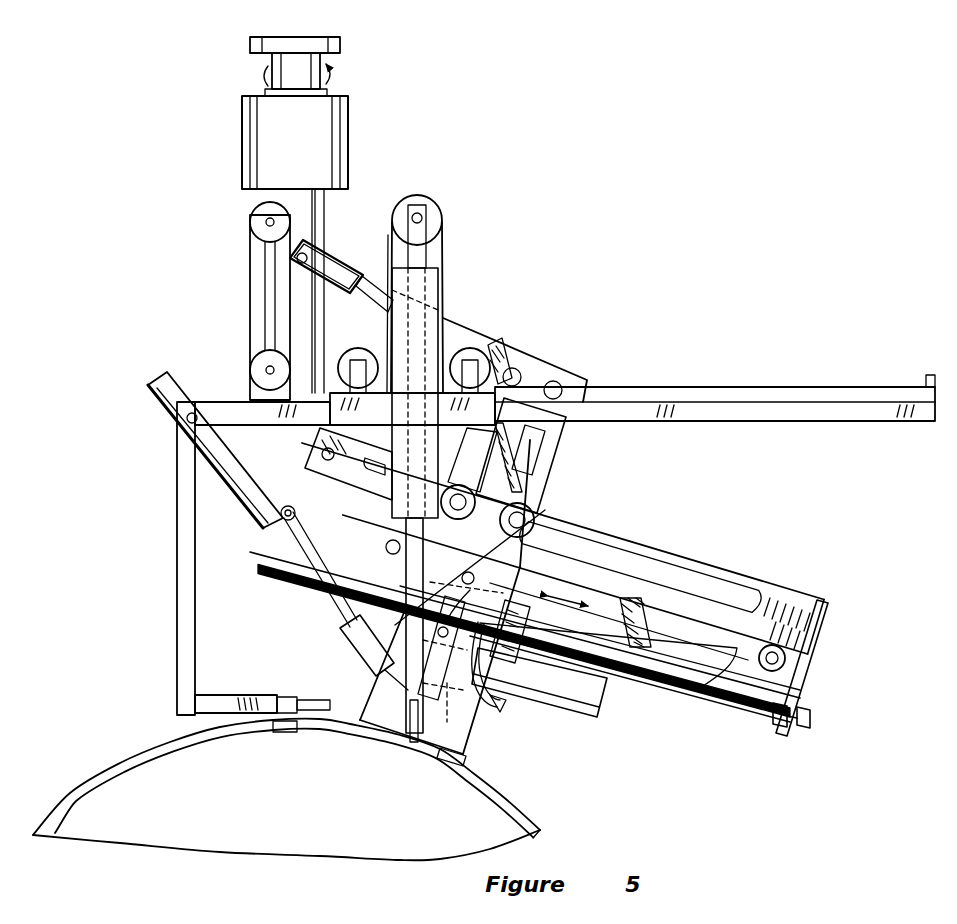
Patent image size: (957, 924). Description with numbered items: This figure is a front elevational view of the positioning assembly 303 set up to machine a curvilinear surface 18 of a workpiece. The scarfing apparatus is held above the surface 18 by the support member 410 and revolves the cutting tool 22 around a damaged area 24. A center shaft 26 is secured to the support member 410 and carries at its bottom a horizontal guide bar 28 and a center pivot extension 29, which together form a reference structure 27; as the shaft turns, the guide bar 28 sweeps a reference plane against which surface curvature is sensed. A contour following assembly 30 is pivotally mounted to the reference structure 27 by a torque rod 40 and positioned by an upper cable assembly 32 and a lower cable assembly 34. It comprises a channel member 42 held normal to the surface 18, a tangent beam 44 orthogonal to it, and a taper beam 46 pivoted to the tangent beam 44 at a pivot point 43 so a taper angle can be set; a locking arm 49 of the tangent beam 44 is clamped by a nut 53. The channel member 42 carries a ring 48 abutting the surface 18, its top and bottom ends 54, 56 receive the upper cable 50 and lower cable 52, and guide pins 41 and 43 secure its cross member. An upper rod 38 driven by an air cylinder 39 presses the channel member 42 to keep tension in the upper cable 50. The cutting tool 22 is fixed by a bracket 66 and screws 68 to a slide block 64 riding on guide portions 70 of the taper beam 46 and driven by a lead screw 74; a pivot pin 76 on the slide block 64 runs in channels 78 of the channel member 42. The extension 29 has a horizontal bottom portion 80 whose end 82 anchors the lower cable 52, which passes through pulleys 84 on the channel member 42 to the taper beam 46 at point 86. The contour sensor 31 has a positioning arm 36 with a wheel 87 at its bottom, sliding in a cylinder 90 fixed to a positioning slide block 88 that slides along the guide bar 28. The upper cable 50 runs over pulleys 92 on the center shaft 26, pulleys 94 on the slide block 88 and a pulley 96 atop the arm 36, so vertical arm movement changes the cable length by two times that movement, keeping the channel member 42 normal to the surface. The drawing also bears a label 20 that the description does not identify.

The surface 18 is at (522, 808).
The scarfing apparatus 20 is at (457, 88).
The cutting tool 22 is at (468, 728).
The damaged area 24 is at (290, 735).
The center shaft 26 is at (326, 214).
The reference structure 27 is at (156, 330).
The horizontal guide bar 28 is at (878, 412).
The center pivot extension 29 is at (176, 548).
The contour following assembly 30 is at (574, 330).
The contour sensor 31 is at (493, 184).
The upper cable assembly 32 is at (247, 262).
The lower cable assembly 34 is at (296, 686).
The positioning arm 36 is at (426, 252).
The upper rod 38 is at (328, 245).
The air cylinder 39 is at (370, 282).
The torque rod 40 is at (240, 490).
The first guide pin 41 is at (575, 518).
The channel member 42 is at (553, 376).
The pivot point 43 is at (478, 493).
The tangent beam 44 is at (812, 604).
The taper beam 46 is at (802, 648).
The ring 48 is at (470, 754).
The locking arm 49 is at (372, 506).
The upper cable 50 is at (262, 304).
The lower cable 52 is at (352, 685).
The nut 53 is at (292, 508).
The top end 54 is at (505, 355).
The bottom end 56 is at (383, 733).
The slide block 64 is at (545, 628).
The bracket 66 is at (505, 705).
The screws 68 is at (518, 685).
The guide portions 70 is at (800, 700).
The lead screw 74 is at (765, 720).
The pivot pin 76 is at (448, 598).
The channels 78 is at (470, 590).
The bottom portion 80 is at (186, 712).
The end 82 is at (316, 703).
The pulleys 84 is at (505, 700).
The point 86 is at (696, 698).
The wheel 87 is at (406, 740).
The positioning slide block 88 is at (560, 435).
The cylinder 90 is at (440, 300).
The pulleys 92 is at (252, 222).
The pulleys 94 is at (358, 350).
The pulley 96 is at (430, 200).
The positioning assembly 303 is at (592, 168).
The support member 410 is at (212, 128).